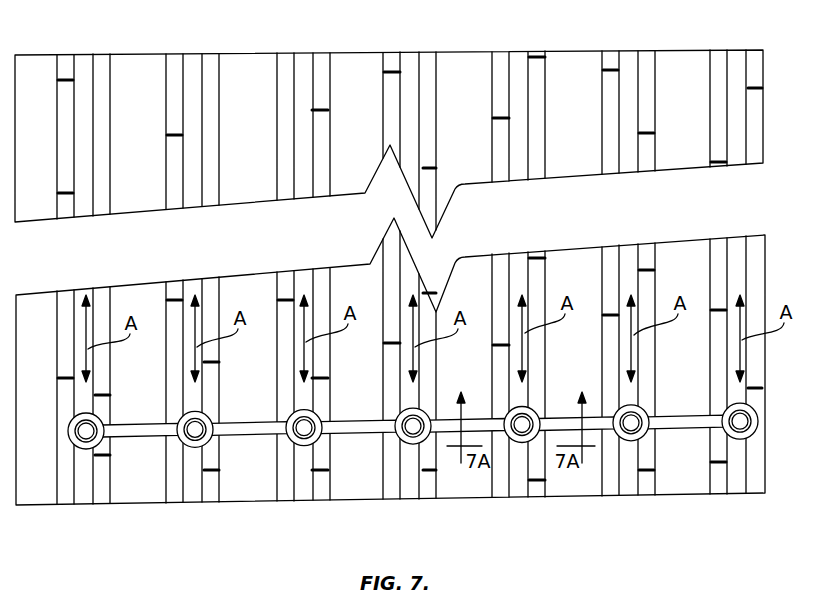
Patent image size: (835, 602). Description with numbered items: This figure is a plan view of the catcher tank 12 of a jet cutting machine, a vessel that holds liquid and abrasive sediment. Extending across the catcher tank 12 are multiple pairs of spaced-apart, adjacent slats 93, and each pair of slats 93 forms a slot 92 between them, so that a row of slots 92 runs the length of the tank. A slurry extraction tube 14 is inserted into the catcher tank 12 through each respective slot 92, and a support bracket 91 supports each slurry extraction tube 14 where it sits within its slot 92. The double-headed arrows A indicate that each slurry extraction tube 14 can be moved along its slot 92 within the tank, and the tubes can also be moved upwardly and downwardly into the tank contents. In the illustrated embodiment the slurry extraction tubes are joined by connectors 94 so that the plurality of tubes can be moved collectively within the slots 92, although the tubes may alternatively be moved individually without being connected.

The catcher tank 12 is at (765, 145).
The slurry extraction tube 14 is at (86, 449).
The support bracket 91 is at (98, 418).
The slot 92 is at (93, 78).
The slat 93 is at (57, 133).
The connector 94 is at (145, 437).